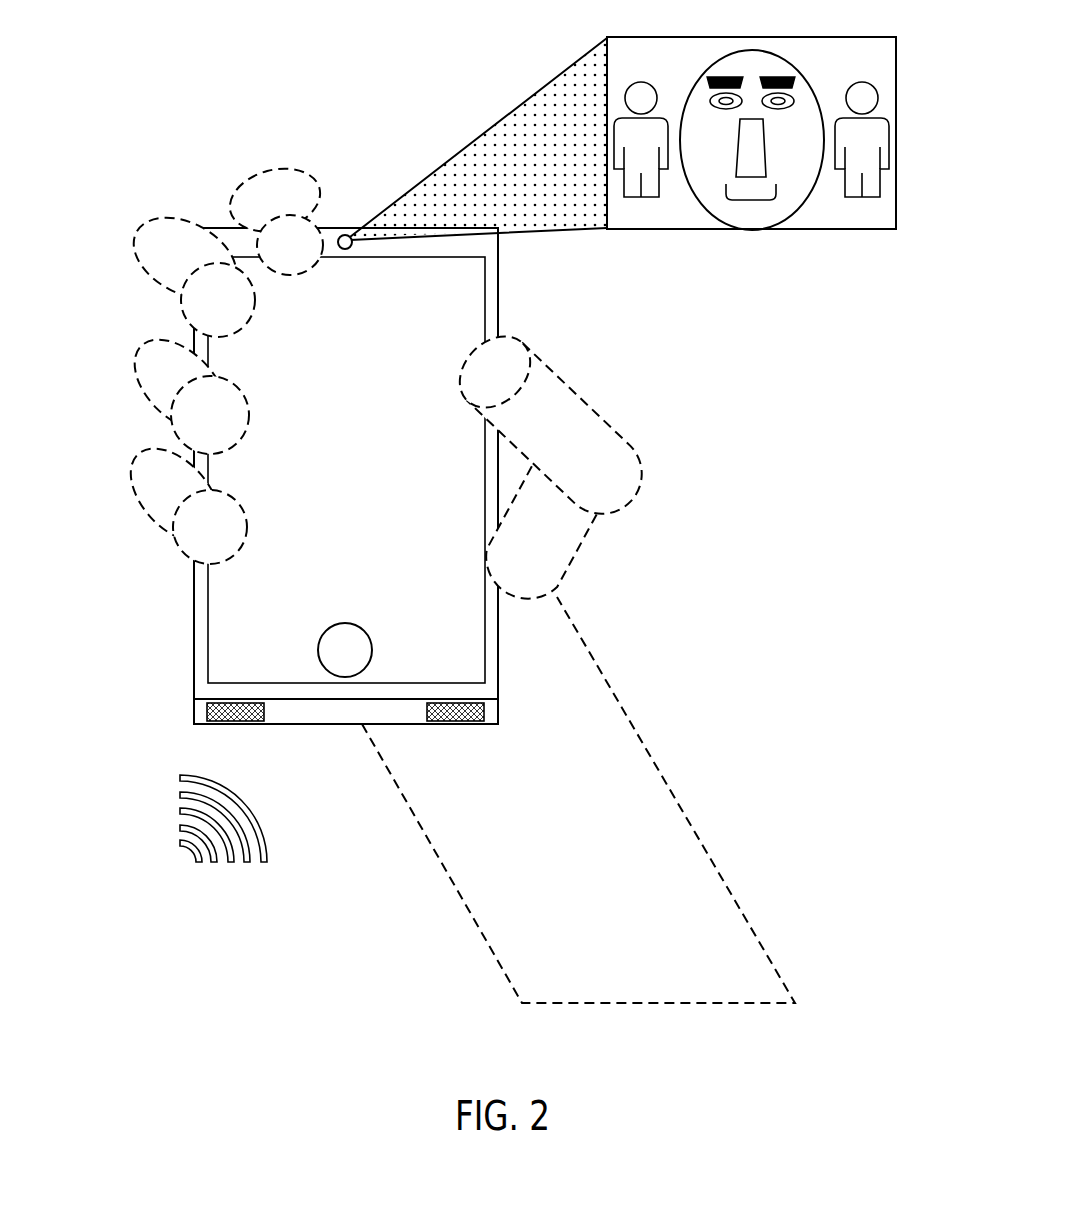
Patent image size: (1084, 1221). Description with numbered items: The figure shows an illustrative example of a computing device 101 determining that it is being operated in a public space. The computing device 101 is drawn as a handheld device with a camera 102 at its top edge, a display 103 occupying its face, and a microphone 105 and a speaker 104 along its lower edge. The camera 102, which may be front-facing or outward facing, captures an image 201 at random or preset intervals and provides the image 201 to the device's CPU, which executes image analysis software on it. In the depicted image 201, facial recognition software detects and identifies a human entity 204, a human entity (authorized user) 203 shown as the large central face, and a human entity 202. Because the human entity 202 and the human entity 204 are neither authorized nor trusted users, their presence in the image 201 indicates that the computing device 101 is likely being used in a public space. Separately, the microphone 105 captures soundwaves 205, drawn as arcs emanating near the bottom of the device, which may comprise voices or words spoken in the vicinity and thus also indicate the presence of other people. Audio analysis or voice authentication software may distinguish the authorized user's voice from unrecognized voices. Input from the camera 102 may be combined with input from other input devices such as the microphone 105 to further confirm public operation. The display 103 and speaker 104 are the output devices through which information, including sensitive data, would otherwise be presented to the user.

The computing device 101 is at (270, 464).
The camera 102 is at (346, 234).
The display 103 is at (207, 574).
The speaker 104 is at (450, 722).
The microphone 105 is at (233, 722).
The image 201 is at (721, 214).
The human entity 202 is at (880, 198).
The human entity (authorized user) 203 is at (786, 234).
The human entity 204 is at (658, 198).
The soundwaves 205 is at (183, 864).